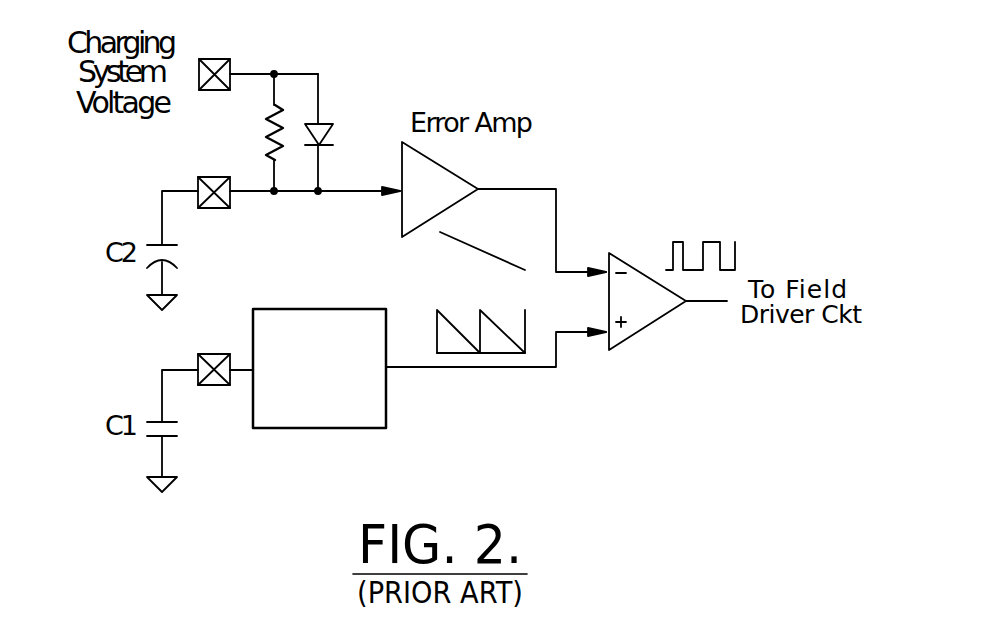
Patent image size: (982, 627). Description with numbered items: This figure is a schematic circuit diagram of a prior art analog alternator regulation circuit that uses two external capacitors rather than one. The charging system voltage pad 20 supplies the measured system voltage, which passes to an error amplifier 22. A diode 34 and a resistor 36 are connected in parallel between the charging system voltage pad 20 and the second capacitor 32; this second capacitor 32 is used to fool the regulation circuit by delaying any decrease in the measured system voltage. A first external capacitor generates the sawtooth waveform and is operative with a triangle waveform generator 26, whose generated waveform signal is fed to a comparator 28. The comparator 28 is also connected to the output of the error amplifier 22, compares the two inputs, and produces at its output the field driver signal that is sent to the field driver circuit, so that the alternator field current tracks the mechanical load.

The charging system voltage pad 20 is at (220, 58).
The error amplifier 22 is at (458, 170).
The triangle waveform generator 26 is at (387, 397).
The comparator 28 is at (647, 328).
The second capacitor 32 is at (125, 369).
The diode 34 is at (351, 132).
The resistor 36 is at (268, 133).